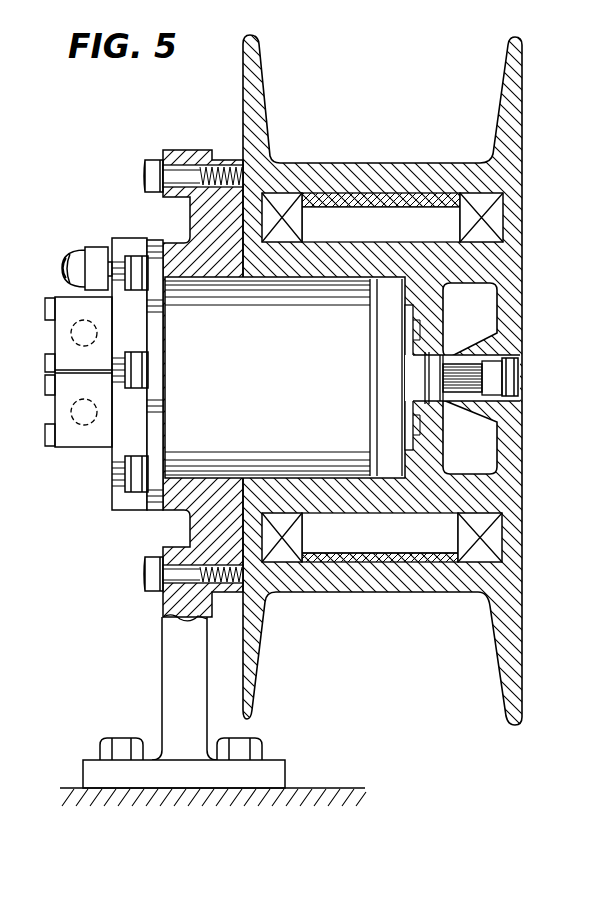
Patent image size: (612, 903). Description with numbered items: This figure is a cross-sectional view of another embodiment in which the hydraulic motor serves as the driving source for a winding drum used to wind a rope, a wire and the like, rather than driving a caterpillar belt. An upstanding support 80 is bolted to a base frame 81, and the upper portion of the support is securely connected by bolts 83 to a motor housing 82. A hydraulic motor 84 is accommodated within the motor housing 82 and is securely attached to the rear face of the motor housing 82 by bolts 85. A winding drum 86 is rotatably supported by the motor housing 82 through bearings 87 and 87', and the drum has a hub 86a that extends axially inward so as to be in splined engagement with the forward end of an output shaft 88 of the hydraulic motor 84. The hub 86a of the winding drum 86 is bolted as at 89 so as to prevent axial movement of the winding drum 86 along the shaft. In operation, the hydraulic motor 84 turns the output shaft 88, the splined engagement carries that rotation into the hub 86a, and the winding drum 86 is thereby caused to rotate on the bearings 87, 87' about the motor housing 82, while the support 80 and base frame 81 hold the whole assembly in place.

The upstanding support 80 is at (165, 690).
The base frame 81 is at (318, 797).
The motor housing 82 is at (183, 490).
The bolts 83 is at (150, 573).
The hydraulic motor 84 is at (173, 412).
The bolts 85 is at (135, 258).
The winding drum 86 is at (376, 172).
The hub 86a is at (472, 412).
The bearing 87 is at (291, 345).
The bearing 87' is at (511, 377).
The output shaft 88 is at (435, 366).
The bolt 89 is at (518, 373).